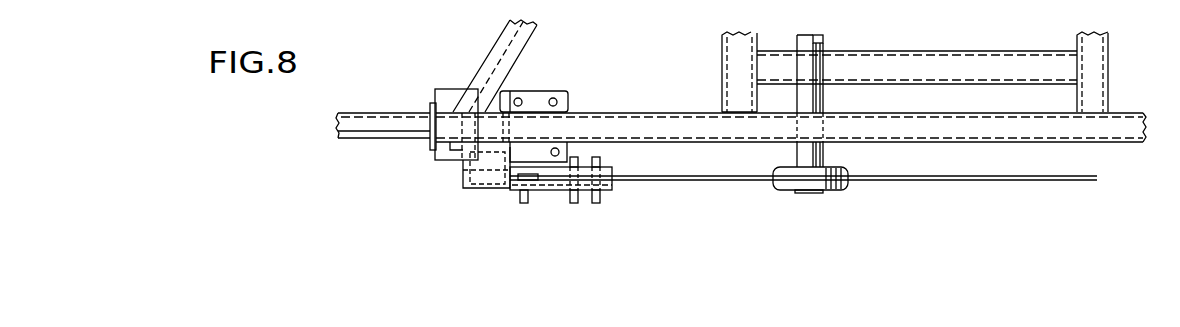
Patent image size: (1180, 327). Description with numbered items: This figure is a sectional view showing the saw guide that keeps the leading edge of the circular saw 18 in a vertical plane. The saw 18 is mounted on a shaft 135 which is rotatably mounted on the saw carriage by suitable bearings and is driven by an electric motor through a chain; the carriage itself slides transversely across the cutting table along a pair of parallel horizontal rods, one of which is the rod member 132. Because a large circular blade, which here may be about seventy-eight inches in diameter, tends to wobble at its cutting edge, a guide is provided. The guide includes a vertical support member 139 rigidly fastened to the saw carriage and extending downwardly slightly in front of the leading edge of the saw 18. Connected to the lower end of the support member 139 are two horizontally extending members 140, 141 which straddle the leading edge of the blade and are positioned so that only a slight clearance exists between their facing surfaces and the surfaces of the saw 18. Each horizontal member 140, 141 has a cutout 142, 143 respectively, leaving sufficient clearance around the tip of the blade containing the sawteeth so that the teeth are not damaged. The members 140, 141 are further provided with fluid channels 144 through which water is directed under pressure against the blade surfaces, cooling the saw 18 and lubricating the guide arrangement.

The saw 18 is at (947, 181).
The horizontal rod member 132 is at (377, 113).
The shaft 135 is at (820, 42).
The vertical support member 139 is at (463, 175).
The horizontally extending member 140 is at (612, 170).
The horizontally extending member 141 is at (612, 185).
The cutout 142 is at (510, 180).
The cutout 143 is at (535, 188).
The fluid channels 144 is at (523, 196).